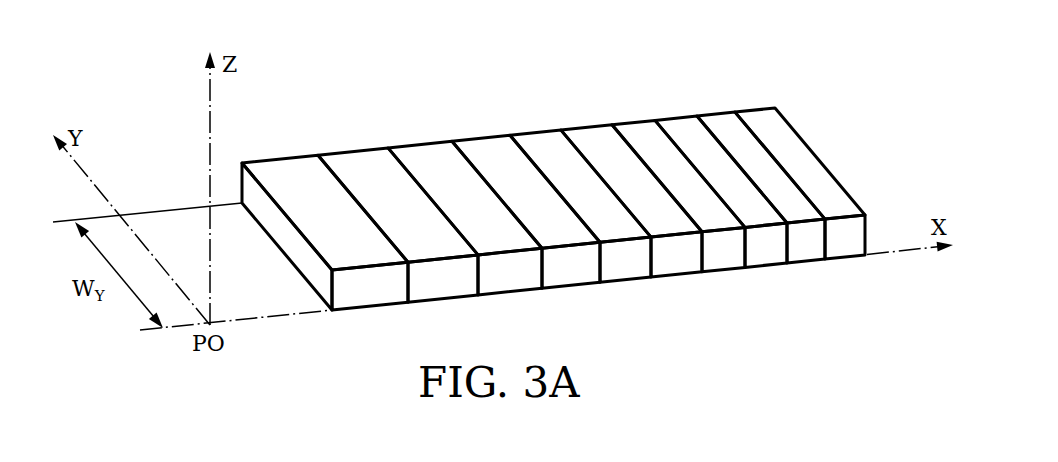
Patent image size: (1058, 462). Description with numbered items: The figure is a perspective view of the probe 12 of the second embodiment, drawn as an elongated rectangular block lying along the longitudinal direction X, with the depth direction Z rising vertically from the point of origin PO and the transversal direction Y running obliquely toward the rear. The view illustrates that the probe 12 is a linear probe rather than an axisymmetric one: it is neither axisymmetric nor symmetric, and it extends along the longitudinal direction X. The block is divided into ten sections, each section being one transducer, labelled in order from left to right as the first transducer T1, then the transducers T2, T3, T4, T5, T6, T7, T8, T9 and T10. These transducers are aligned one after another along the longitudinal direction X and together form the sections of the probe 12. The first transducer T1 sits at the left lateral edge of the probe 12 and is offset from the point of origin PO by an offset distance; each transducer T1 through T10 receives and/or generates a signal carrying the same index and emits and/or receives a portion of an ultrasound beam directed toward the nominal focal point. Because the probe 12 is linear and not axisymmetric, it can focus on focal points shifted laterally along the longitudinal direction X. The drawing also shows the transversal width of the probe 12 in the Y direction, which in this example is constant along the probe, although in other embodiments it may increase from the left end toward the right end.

The probe 12 is at (553, 237).
The first transducer T1 is at (325, 232).
The transducer T2 is at (398, 225).
The transducer T3 is at (465, 218).
The transducer T4 is at (526, 211).
The transducer T5 is at (580, 206).
The transducer T6 is at (631, 201).
The transducer T7 is at (678, 195).
The transducer T8 is at (721, 191).
The transducer T9 is at (761, 187).
The transducer T10 is at (800, 183).